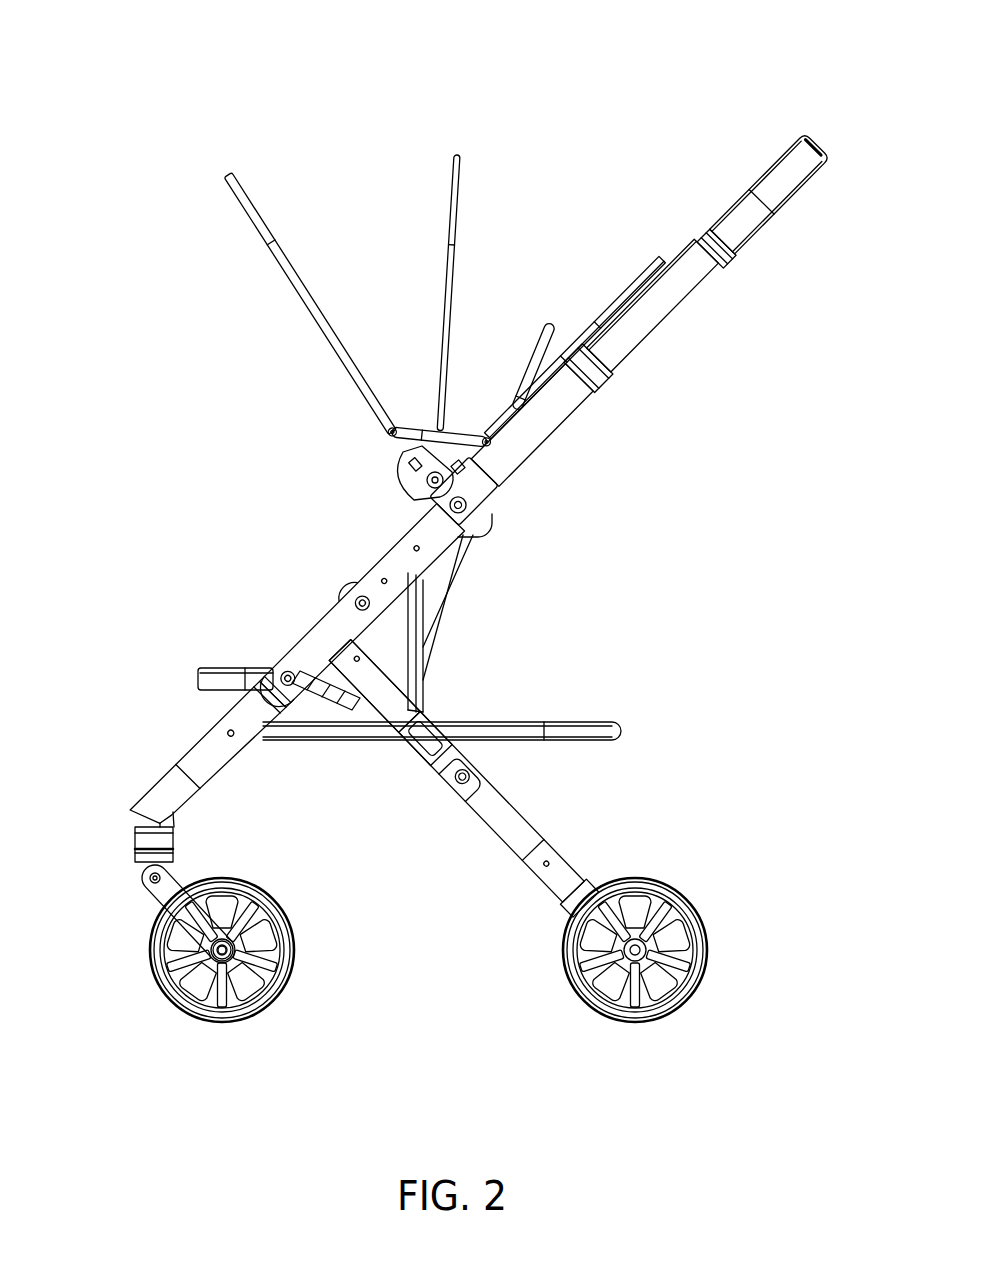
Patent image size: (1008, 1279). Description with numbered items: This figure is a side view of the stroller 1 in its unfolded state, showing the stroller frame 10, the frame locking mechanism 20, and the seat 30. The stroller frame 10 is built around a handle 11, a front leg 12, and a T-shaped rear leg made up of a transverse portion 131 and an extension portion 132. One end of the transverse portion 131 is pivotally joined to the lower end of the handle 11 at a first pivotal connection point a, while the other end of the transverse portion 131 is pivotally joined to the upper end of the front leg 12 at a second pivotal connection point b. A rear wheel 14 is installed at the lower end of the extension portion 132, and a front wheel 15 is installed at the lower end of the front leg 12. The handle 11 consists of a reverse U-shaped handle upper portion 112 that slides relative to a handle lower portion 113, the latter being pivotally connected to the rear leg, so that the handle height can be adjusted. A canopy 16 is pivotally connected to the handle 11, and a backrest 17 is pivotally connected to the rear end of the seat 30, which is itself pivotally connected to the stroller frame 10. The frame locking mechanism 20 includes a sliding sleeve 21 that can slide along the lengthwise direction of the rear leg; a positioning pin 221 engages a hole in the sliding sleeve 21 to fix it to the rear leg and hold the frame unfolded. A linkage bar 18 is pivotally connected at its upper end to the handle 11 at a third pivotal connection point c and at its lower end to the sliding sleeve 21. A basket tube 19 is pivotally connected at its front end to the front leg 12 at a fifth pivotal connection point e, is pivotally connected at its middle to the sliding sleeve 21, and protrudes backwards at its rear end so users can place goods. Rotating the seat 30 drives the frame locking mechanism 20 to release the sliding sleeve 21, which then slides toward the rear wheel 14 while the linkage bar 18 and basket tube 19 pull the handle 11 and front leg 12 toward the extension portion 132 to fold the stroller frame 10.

The stroller 1 is at (147, 34).
The stroller frame 10 is at (268, 489).
The handle 11 is at (832, 300).
The handle upper portion 112 is at (657, 311).
The handle lower portion 113 is at (550, 413).
The front leg 12 is at (210, 752).
The transverse portion 131 is at (343, 628).
The extension portion 132 is at (387, 694).
The rear wheel 14 is at (700, 935).
The front wheel 15 is at (150, 942).
The canopy 16 is at (330, 336).
The backrest 17 is at (539, 352).
The linkage bar 18 is at (414, 590).
The basket tube 19 is at (343, 742).
The frame locking mechanism 20 is at (425, 777).
The sliding sleeve 21 is at (445, 745).
The positioning pin 221 is at (412, 757).
The seat 30 is at (218, 673).
The first pivotal connection point a is at (362, 601).
The second pivotal connection point b is at (286, 676).
The third pivotal connection point c is at (421, 548).
The fifth pivotal connection point e is at (229, 731).